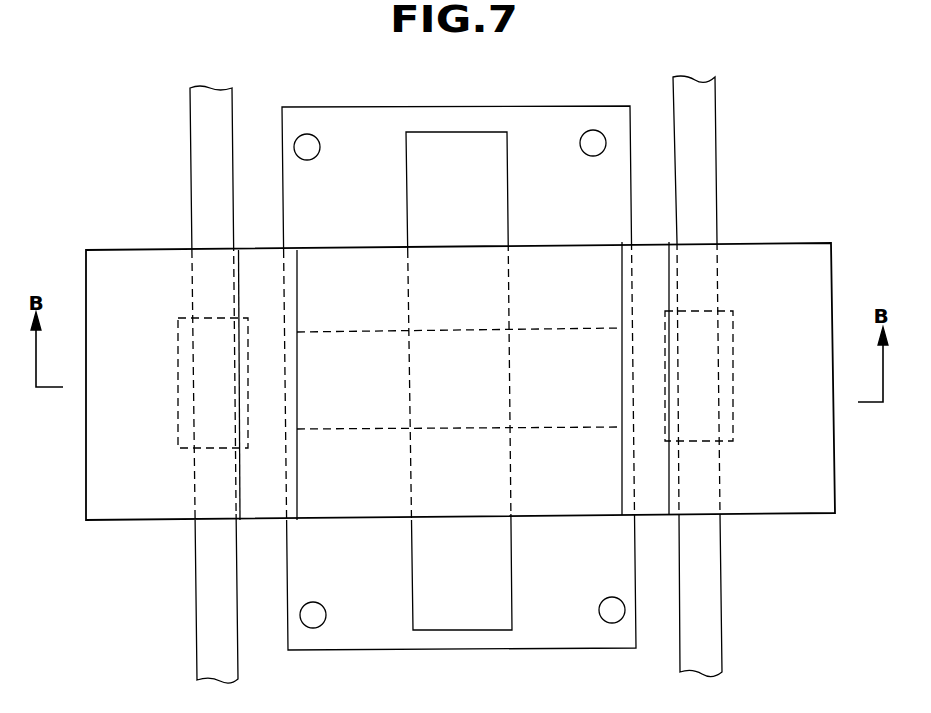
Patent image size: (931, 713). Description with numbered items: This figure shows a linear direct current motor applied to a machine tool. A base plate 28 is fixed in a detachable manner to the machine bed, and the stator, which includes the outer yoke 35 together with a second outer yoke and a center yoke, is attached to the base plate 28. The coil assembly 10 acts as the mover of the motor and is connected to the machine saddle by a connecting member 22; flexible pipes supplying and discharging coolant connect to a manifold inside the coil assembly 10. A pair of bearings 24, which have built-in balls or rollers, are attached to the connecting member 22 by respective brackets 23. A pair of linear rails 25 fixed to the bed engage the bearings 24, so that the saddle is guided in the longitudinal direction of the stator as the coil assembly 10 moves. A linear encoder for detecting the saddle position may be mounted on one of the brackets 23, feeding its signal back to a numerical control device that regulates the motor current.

The coil assembly 10 is at (530, 418).
The connecting member 22 is at (383, 247).
The brackets 23 is at (783, 511).
The bearings 24 is at (182, 337).
The linear rails 25 is at (197, 147).
The base plate 28 is at (554, 106).
The outer yoke 35 is at (453, 132).